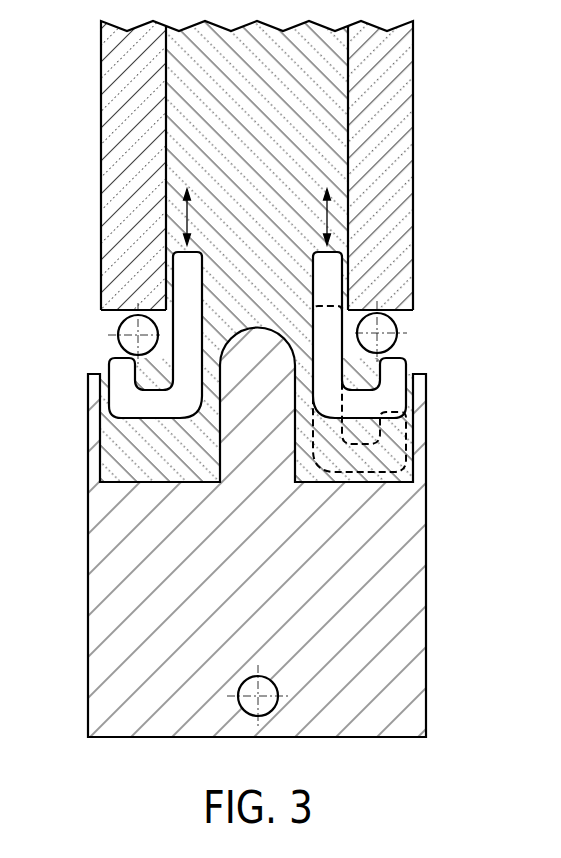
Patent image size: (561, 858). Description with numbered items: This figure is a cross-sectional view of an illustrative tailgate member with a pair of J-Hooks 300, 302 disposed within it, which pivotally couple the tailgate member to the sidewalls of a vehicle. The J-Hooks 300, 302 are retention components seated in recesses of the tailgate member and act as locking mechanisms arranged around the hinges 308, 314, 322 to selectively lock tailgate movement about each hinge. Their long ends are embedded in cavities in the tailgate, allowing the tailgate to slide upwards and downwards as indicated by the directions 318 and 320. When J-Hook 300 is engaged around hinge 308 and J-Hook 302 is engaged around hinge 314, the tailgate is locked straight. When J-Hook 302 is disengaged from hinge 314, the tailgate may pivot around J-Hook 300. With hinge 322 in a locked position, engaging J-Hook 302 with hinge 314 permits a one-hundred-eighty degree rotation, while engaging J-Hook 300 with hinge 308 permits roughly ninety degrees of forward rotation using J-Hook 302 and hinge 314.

The J-Hook 300 is at (392, 395).
The J-Hook 302 is at (123, 395).
The hinge 308 is at (393, 325).
The hinge 314 is at (118, 338).
The direction 318 is at (189, 212).
The direction 320 is at (325, 212).
The hinge 322 is at (266, 714).